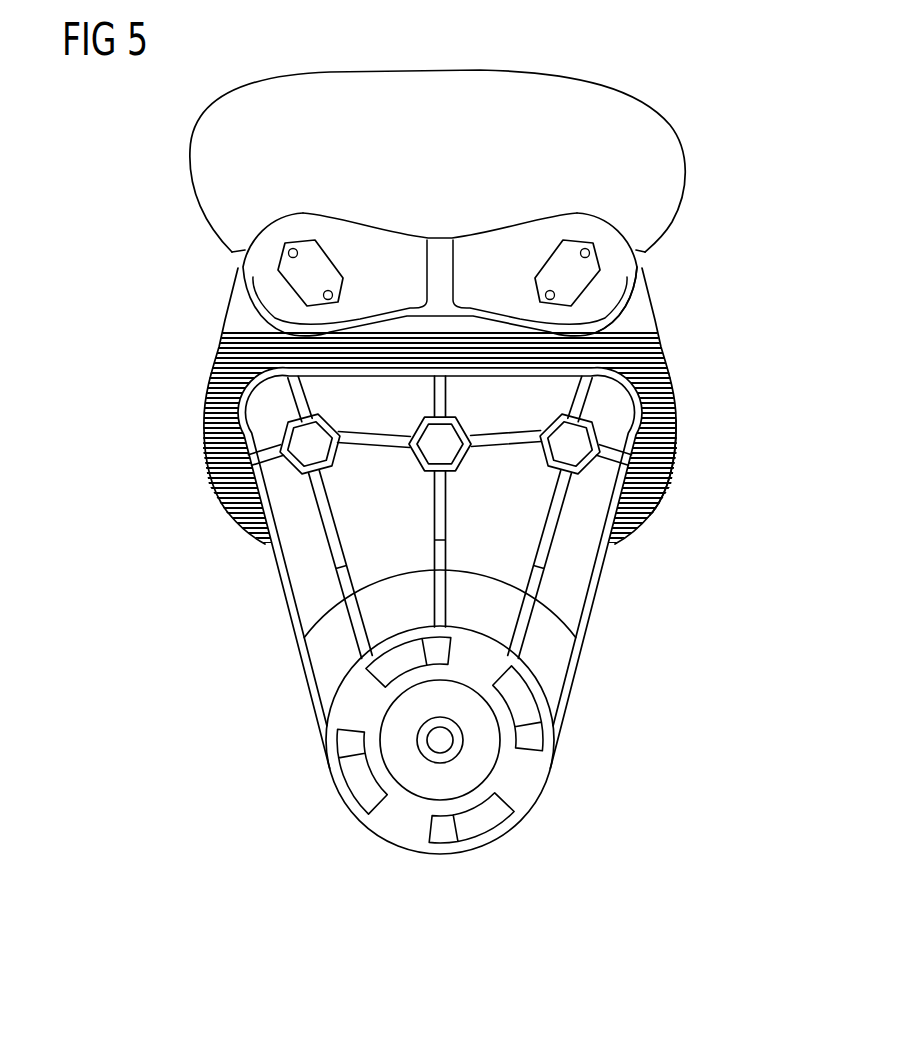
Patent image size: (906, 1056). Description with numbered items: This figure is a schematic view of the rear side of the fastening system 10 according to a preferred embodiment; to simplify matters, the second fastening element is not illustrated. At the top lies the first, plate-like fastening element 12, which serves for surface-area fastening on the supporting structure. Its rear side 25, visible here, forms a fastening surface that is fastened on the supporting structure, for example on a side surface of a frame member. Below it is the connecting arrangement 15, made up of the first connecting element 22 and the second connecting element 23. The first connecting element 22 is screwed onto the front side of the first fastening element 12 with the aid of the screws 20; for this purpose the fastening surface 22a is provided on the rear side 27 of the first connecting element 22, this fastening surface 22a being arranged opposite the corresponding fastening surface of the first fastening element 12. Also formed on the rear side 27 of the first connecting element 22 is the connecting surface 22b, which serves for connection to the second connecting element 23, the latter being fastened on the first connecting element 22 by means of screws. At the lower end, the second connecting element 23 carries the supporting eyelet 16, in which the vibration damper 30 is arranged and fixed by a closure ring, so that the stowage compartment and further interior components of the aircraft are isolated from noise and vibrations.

The fastening system 10 is at (117, 178).
The first fastening element 12 is at (692, 121).
The connecting arrangement 15 is at (199, 357).
The supporting eyelet 16 is at (540, 777).
The screws 20 is at (425, 450).
The first connecting element 22 is at (332, 263).
The fastening surface 22a is at (643, 320).
The connecting surface 22b is at (676, 462).
The second connecting element 23 is at (608, 598).
The rear side 25 is at (680, 192).
The rear side 27 is at (672, 351).
The vibration damper 30 is at (425, 785).